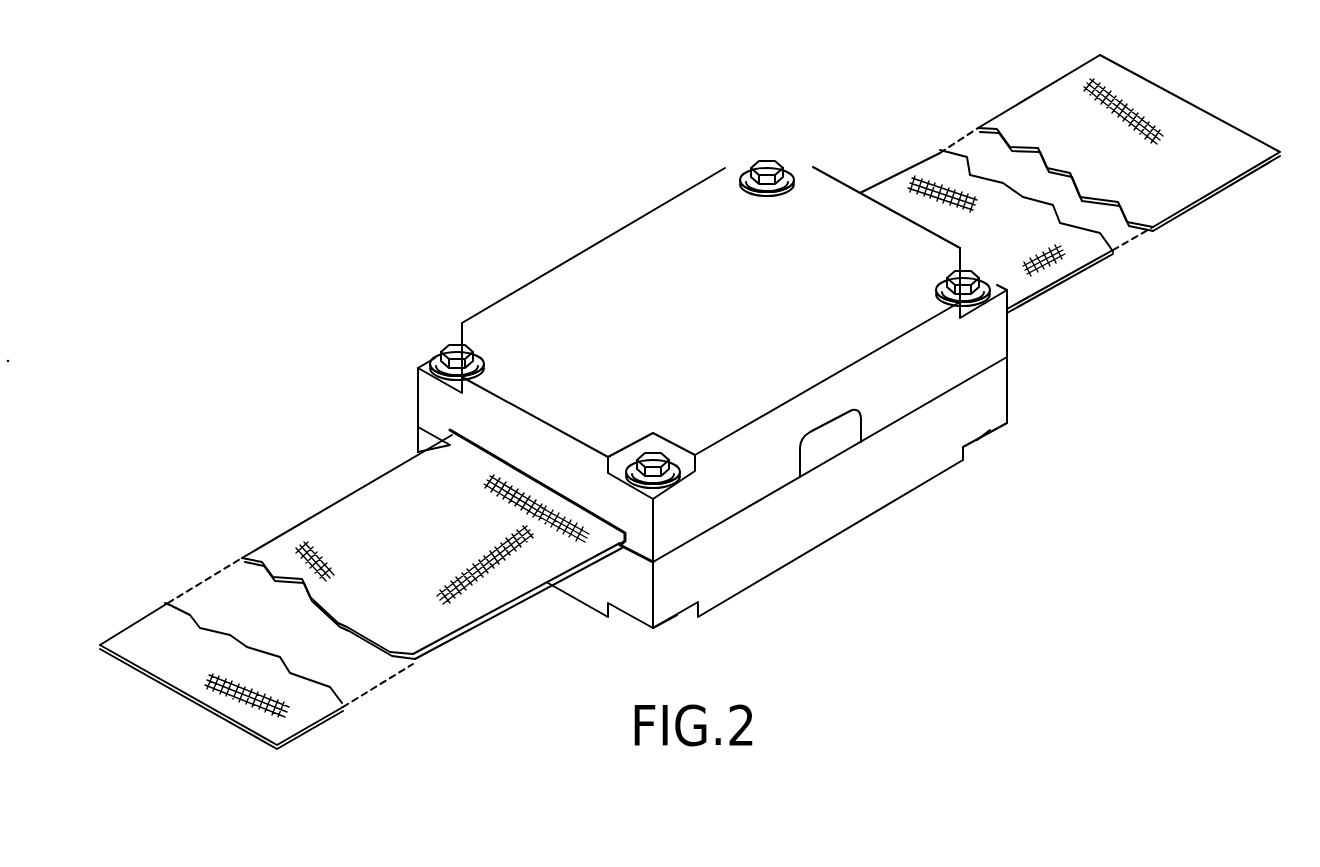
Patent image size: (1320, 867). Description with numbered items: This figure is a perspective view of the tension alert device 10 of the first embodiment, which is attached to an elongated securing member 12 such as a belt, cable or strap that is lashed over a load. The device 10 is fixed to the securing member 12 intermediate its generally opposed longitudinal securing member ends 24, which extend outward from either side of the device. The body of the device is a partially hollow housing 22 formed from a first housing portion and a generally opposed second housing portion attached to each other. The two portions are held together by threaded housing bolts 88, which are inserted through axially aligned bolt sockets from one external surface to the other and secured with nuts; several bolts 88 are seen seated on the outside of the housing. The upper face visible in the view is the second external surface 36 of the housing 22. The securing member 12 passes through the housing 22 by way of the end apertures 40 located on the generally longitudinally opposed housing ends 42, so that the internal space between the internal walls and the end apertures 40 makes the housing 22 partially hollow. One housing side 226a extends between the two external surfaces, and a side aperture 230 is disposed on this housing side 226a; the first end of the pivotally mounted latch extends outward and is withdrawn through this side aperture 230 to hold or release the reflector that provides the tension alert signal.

The tension alert device 10 is at (350, 303).
The securing member 12 is at (278, 540).
The housing 22 is at (838, 168).
The securing member ends 24 is at (168, 622).
The second external surface 36 is at (665, 274).
The end aperture 40 is at (452, 432).
The housing end 42 is at (432, 400).
The housing bolt 88 is at (457, 350).
The housing side 226a is at (815, 543).
The side aperture 230 is at (825, 445).